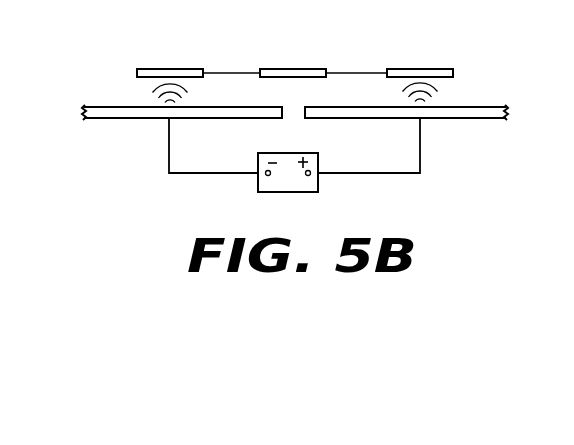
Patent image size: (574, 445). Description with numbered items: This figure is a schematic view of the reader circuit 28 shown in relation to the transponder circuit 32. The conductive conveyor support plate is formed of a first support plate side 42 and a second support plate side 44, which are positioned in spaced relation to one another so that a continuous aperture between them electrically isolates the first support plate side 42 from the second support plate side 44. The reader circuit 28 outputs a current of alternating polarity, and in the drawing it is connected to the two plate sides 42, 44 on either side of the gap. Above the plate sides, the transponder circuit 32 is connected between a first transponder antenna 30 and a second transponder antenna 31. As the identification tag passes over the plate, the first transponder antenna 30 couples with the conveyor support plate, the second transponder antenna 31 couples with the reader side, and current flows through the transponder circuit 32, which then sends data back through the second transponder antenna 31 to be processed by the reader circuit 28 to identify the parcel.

The reader circuit 28 is at (287, 192).
The first transponder antenna 30 is at (168, 68).
The second transponder antenna 31 is at (417, 68).
The transponder circuit 32 is at (291, 68).
The first support plate side 42 is at (432, 119).
The second support plate side 44 is at (143, 119).